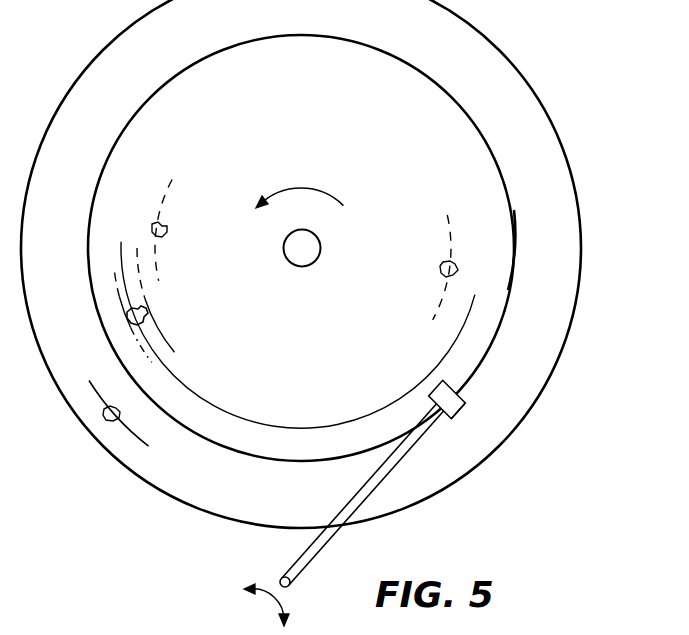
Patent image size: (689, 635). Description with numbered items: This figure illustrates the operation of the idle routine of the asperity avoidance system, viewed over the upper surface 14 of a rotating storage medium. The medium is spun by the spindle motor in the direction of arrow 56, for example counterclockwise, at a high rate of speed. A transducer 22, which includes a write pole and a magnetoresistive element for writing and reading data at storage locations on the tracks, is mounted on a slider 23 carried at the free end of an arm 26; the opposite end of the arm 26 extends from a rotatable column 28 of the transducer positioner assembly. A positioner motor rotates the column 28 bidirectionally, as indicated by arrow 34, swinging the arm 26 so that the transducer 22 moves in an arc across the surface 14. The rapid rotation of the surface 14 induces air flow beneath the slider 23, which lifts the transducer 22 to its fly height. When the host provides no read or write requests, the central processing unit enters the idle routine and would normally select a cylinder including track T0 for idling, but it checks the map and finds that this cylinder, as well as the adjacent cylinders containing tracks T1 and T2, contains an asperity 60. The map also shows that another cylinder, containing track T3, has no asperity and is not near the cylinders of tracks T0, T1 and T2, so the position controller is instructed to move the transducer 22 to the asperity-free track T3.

The upper surface 14 is at (560, 295).
The transducer 22 is at (458, 401).
The slider 23 is at (452, 420).
The arm 26 is at (400, 464).
The rotatable column 28 is at (291, 587).
The arrow 34 is at (267, 583).
The arrow 56 is at (302, 187).
The asperity 60 is at (156, 226).
The track T0 is at (297, 428).
The track T1 is at (176, 350).
The track T2 is at (146, 364).
The track T3 is at (513, 250).